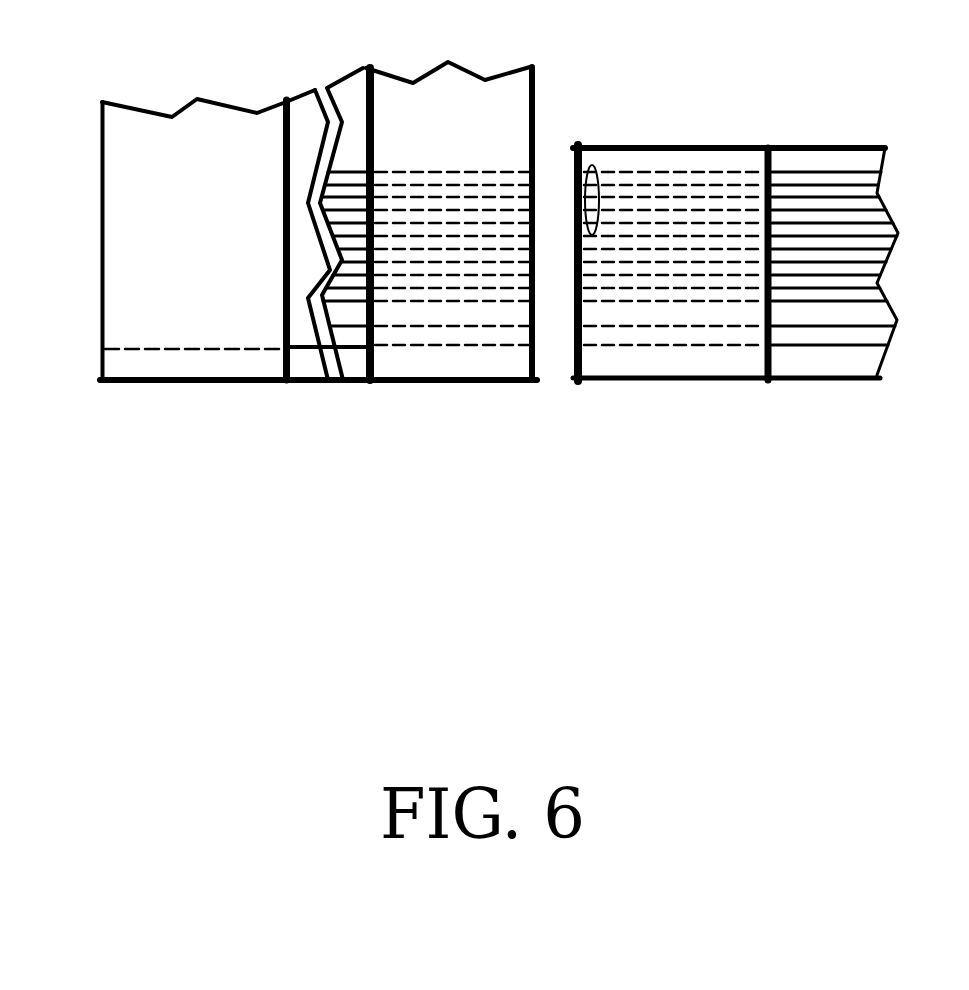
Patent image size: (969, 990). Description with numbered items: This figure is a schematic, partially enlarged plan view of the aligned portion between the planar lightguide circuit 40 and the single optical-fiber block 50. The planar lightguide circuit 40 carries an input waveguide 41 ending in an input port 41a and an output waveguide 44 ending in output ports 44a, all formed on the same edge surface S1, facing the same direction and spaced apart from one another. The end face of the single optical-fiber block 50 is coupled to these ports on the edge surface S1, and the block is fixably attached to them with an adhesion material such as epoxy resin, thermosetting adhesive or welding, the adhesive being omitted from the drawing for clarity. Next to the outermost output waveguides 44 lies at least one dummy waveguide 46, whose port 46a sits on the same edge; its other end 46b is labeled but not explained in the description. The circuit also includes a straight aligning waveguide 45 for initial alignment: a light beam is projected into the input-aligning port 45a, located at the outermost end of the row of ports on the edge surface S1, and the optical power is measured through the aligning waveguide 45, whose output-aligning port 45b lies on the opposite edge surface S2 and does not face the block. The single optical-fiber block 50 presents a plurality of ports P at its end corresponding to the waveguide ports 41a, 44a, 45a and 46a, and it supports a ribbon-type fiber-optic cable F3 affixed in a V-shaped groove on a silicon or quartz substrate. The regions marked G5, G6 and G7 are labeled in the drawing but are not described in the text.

The planar lightguide circuit 40 is at (421, 387).
The single optical-fiber block 50 is at (690, 387).
The input waveguide 41 is at (318, 345).
The output waveguide 44 is at (320, 233).
The aligning waveguide 45 is at (357, 350).
The dummy waveguide 46 is at (362, 165).
The input port 41a is at (537, 327).
The output ports 44a is at (541, 283).
The input-aligning port 45a is at (535, 343).
The output-aligning port 45b is at (102, 352).
The dummy waveguide port 46a is at (537, 300).
The connection terminal end 46b is at (538, 172).
The ports P is at (585, 347).
The edge surface S1 is at (535, 110).
The other edge surface S2 is at (100, 233).
The fifth gap G5 is at (212, 125).
The sixth gap G6 is at (463, 90).
The seventh gap G7 is at (677, 147).
The ribbon-type fiber-optic cable F3 is at (822, 187).